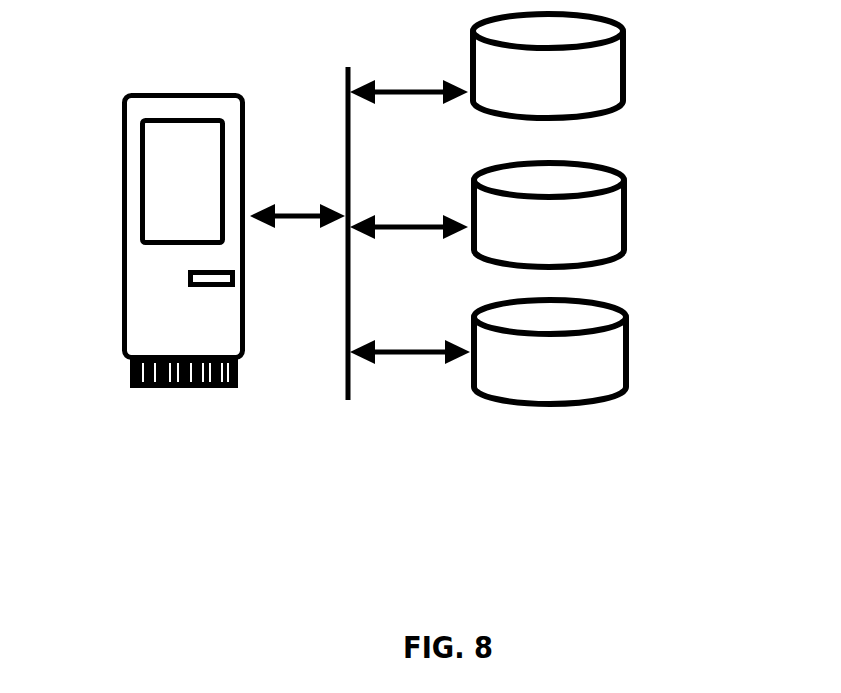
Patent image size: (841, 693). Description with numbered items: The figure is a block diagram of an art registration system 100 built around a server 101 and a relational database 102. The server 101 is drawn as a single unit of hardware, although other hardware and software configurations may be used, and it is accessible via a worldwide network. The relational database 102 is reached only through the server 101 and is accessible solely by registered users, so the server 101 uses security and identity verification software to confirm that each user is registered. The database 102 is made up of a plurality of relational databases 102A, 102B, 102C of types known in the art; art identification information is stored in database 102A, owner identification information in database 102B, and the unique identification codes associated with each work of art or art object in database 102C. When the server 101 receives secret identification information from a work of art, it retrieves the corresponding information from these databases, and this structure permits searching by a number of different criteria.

The art registration system 100 is at (396, 285).
The server 101 is at (198, 180).
The relational database 102 is at (621, 259).
The art identification information database 102A is at (611, 66).
The owner identification information database 102B is at (616, 215).
The unique identification codes database 102C is at (622, 352).